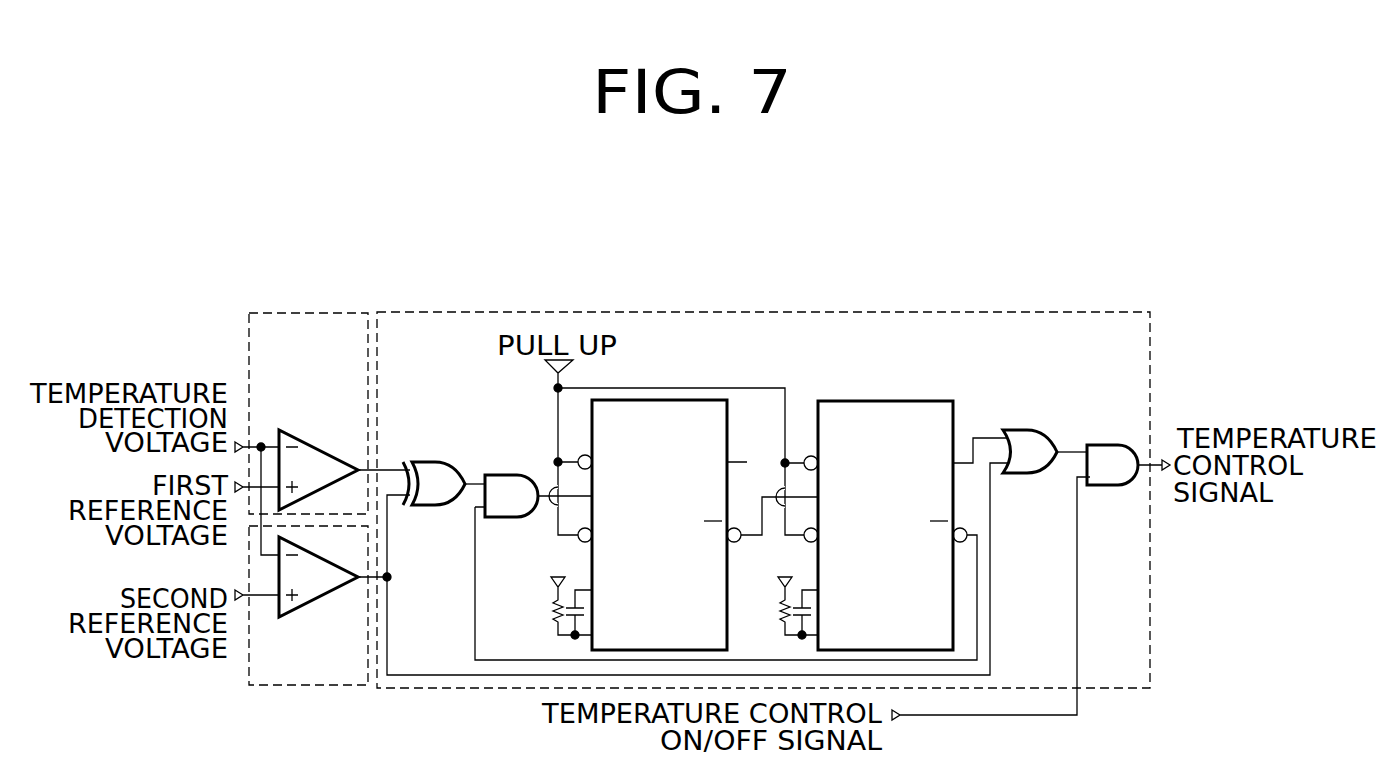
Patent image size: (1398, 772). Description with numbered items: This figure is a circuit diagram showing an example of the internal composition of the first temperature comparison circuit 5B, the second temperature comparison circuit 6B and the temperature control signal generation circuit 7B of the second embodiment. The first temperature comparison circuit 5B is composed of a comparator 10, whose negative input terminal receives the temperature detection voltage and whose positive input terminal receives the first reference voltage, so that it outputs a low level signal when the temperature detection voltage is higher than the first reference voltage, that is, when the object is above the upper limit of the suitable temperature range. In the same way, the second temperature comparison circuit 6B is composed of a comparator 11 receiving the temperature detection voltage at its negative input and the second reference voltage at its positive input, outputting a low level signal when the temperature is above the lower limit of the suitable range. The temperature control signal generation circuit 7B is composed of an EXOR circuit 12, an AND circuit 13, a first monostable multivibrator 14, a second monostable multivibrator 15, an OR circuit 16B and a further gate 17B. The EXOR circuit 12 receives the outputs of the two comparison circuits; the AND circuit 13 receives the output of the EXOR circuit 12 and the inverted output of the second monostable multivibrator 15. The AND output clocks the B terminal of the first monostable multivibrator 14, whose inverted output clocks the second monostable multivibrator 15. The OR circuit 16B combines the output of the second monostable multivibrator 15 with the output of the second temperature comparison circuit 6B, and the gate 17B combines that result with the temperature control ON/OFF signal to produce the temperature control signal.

The first temperature comparison circuit 5B is at (316, 312).
The second temperature comparison circuit 6B is at (313, 686).
The temperature control signal generation circuit 7B is at (690, 312).
The comparator 10 is at (306, 432).
The comparator 11 is at (318, 598).
The EXOR circuit 12 is at (421, 506).
The AND circuit 13 is at (505, 518).
The first monostable multivibrator 14 is at (731, 449).
The second monostable multivibrator 15 is at (878, 400).
The OR circuit 16B is at (1025, 430).
The OR circuit 17B is at (1100, 446).